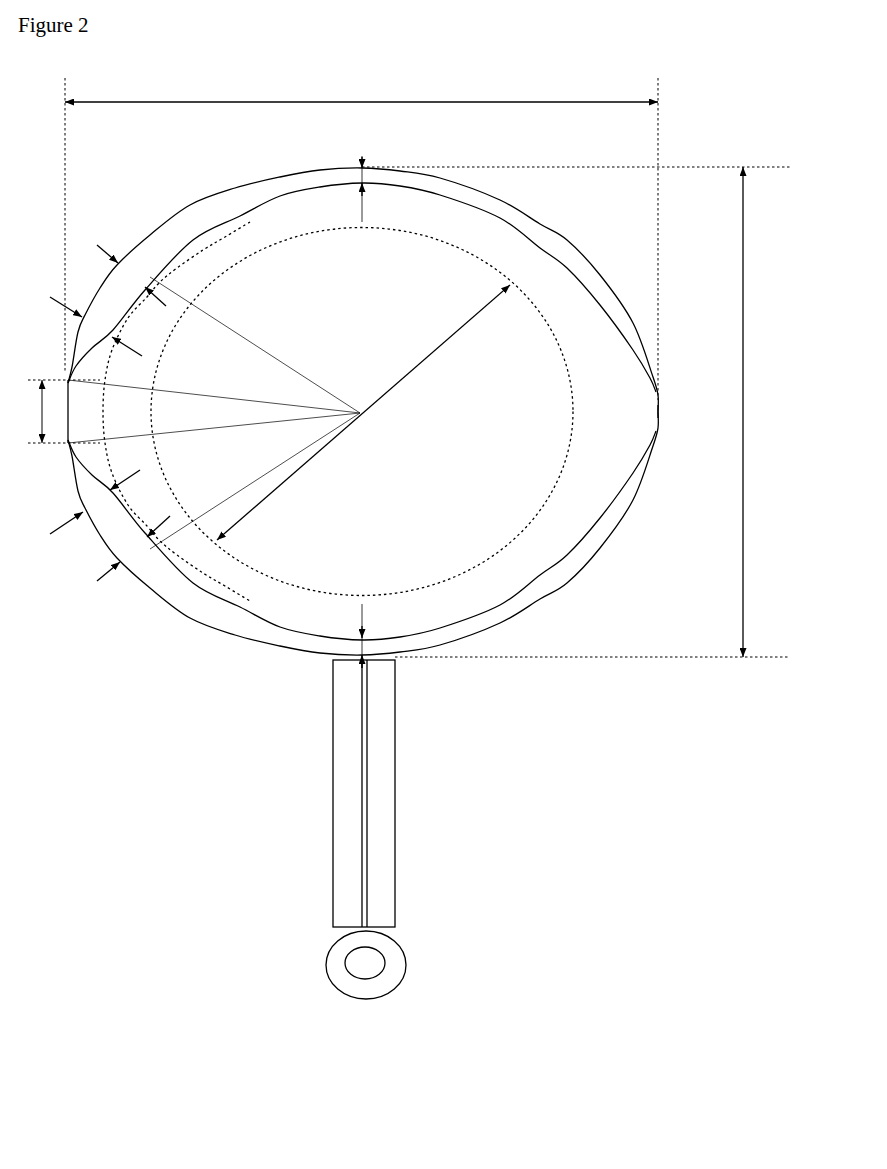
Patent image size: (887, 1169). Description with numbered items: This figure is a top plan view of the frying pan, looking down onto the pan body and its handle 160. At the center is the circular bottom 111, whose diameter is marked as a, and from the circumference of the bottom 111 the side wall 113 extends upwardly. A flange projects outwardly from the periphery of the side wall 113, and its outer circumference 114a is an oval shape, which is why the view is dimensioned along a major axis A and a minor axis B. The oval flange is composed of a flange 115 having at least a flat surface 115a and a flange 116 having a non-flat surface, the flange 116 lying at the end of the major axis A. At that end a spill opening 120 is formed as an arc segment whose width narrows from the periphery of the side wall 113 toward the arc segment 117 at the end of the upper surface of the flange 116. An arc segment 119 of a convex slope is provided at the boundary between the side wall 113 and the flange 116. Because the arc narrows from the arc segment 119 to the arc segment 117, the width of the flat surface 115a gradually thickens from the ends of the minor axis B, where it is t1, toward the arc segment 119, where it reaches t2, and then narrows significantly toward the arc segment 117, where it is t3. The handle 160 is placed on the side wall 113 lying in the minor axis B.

The circular bottom 111 is at (380, 306).
The side wall 113 is at (272, 603).
The outer circumference of flange 114a is at (527, 618).
The flange having flat surface 115 is at (300, 167).
The flat surface 115a is at (198, 218).
The flange having non-flat surface 116 is at (67, 415).
The arc segment at end of flange upper surface 117 is at (54, 411).
The arc segment of convex slope 119 is at (176, 411).
The spill opening 120 is at (662, 408).
The handle 160 is at (332, 793).
The diameter of bottom a is at (289, 413).
The width of flat surface at minor axis t1 is at (376, 412).
The width of flat surface near arc segment 119 t2 is at (123, 417).
The width of flat surface near arc segment 117 t3 is at (84, 419).
The major axis A is at (361, 238).
The minor axis B is at (576, 412).